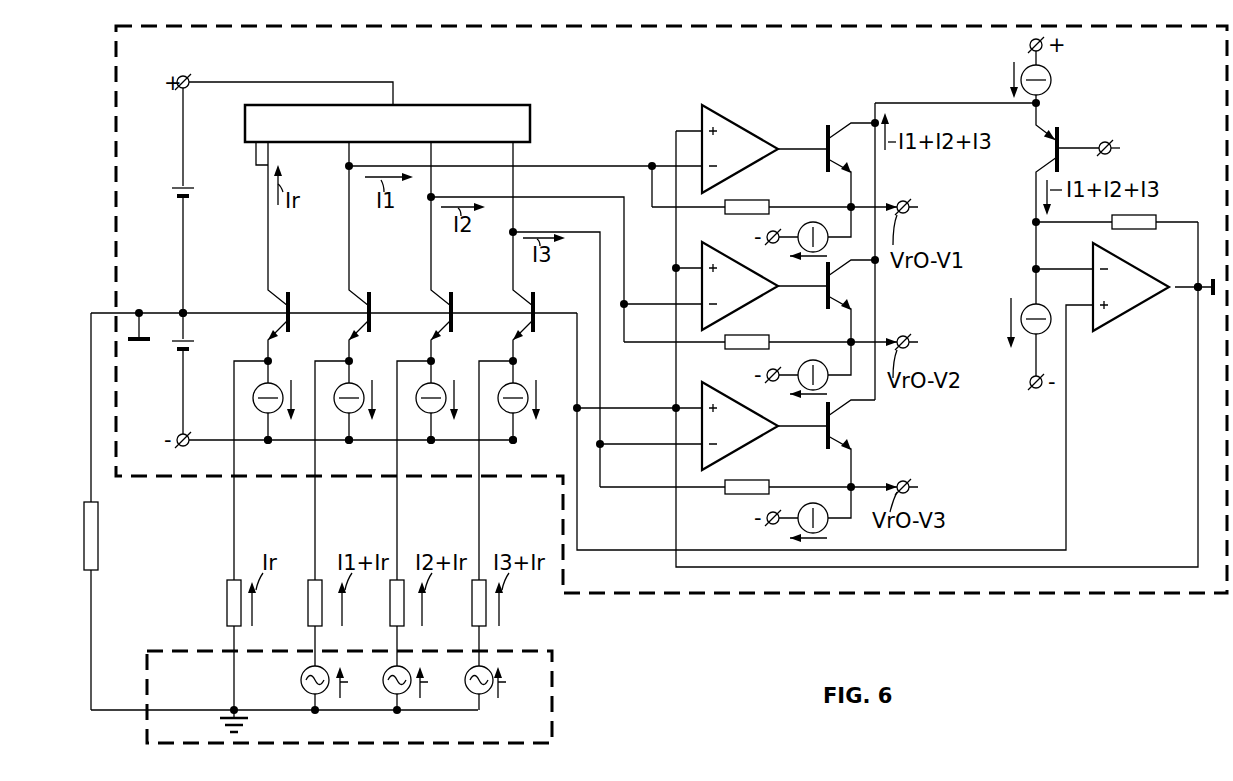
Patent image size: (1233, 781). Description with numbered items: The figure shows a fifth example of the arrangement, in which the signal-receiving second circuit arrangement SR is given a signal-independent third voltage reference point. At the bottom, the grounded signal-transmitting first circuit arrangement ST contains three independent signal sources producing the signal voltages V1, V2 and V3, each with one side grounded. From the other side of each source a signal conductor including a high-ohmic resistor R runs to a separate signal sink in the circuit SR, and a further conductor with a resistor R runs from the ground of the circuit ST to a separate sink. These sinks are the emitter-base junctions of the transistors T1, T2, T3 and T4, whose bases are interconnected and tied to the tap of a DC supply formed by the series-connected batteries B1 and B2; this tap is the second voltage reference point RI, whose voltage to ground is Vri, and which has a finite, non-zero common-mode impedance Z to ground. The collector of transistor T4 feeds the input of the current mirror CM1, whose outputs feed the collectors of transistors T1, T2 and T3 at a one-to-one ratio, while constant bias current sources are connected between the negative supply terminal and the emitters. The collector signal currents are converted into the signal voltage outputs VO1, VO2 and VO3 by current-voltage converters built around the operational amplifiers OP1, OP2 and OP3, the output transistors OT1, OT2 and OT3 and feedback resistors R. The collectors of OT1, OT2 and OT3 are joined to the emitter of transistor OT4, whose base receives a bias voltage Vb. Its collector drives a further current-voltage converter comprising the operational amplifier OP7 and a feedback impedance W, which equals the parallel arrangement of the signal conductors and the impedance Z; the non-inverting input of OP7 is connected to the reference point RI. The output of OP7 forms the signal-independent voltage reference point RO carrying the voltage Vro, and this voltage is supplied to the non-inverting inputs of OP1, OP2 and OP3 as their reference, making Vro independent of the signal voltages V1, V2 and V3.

The current mirror CM1 is at (452, 95).
The battery B1 is at (196, 194).
The battery B2 is at (196, 348).
The transistor T1 is at (374, 301).
The transistor T2 is at (455, 301).
The transistor T3 is at (535, 301).
The transistor T4 is at (291, 301).
The operational amplifier OP1 is at (733, 121).
The operational amplifier OP2 is at (728, 255).
The operational amplifier OP3 is at (723, 390).
The operational amplifier OP7 is at (1108, 328).
The output transistor OT1 is at (826, 127).
The output transistor OT2 is at (825, 294).
The output transistor OT3 is at (825, 441).
The transistor OT4 is at (1062, 130).
The resistor R is at (737, 200).
The feedback impedance W is at (1135, 232).
The signal-independent voltage reference point RO is at (1191, 276).
The impedance Z is at (98, 530).
The signal-receiving second circuit arrangement SR is at (624, 598).
The signal-transmitting first circuit arrangement ST is at (552, 712).
The second voltage reference point RI is at (139, 309).
The voltage at the second voltage reference point Vri is at (184, 309).
The signal voltage V1 is at (340, 688).
The signal voltage V2 is at (421, 688).
The signal voltage V3 is at (502, 688).
The signal voltage output VO1 is at (933, 207).
The signal voltage output VO2 is at (933, 342).
The signal voltage output VO3 is at (933, 487).
The bias voltage Vb is at (1125, 149).
The signal-independent reference voltage Vro is at (1180, 290).